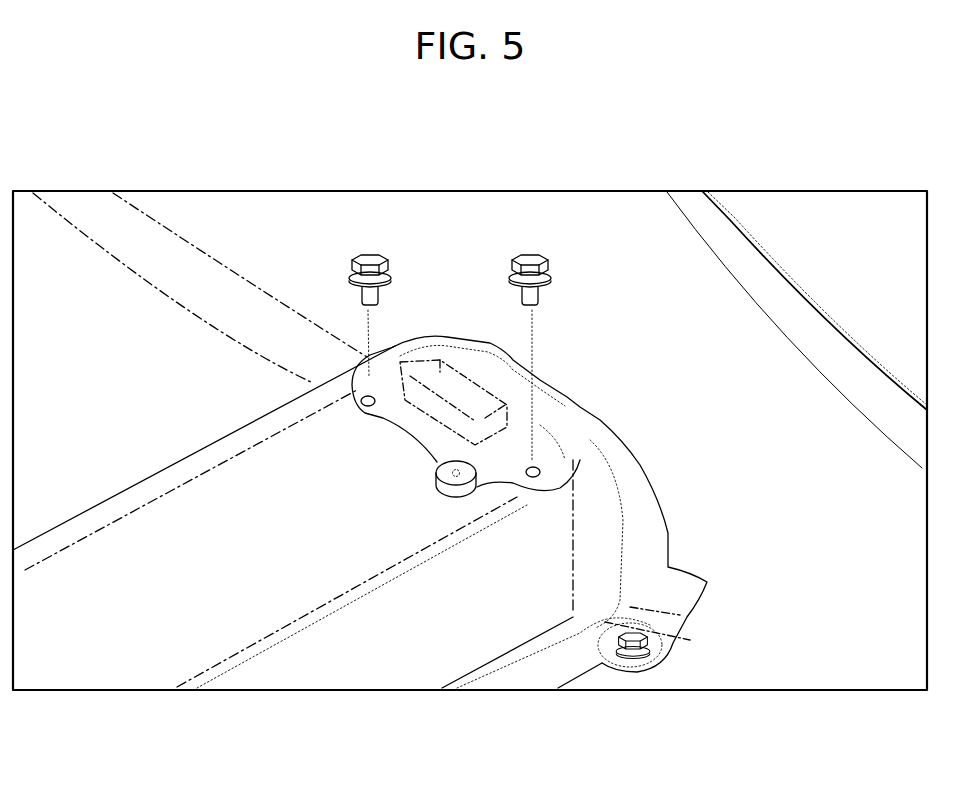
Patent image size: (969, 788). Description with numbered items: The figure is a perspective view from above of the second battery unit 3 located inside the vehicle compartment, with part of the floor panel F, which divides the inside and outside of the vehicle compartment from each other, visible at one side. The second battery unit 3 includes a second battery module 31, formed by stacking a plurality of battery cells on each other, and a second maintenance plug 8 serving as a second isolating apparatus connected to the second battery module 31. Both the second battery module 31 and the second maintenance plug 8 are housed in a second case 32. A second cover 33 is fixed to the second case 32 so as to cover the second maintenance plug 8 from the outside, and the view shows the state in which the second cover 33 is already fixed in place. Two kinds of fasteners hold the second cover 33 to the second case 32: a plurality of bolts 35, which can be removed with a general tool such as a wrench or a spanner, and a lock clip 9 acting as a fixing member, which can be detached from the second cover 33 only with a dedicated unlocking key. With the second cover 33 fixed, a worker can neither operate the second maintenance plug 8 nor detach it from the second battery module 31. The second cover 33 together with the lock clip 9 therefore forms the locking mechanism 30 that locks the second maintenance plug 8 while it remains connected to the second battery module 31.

The second battery unit 3 is at (348, 662).
The second maintenance plug 8 is at (498, 423).
The lock clip 9 is at (448, 460).
The locking mechanism 30 is at (425, 145).
The second battery module 31 is at (185, 482).
The second case 32 is at (270, 407).
The second cover 33 is at (472, 343).
The bolts 35 is at (367, 257).
The floor panel F is at (730, 220).